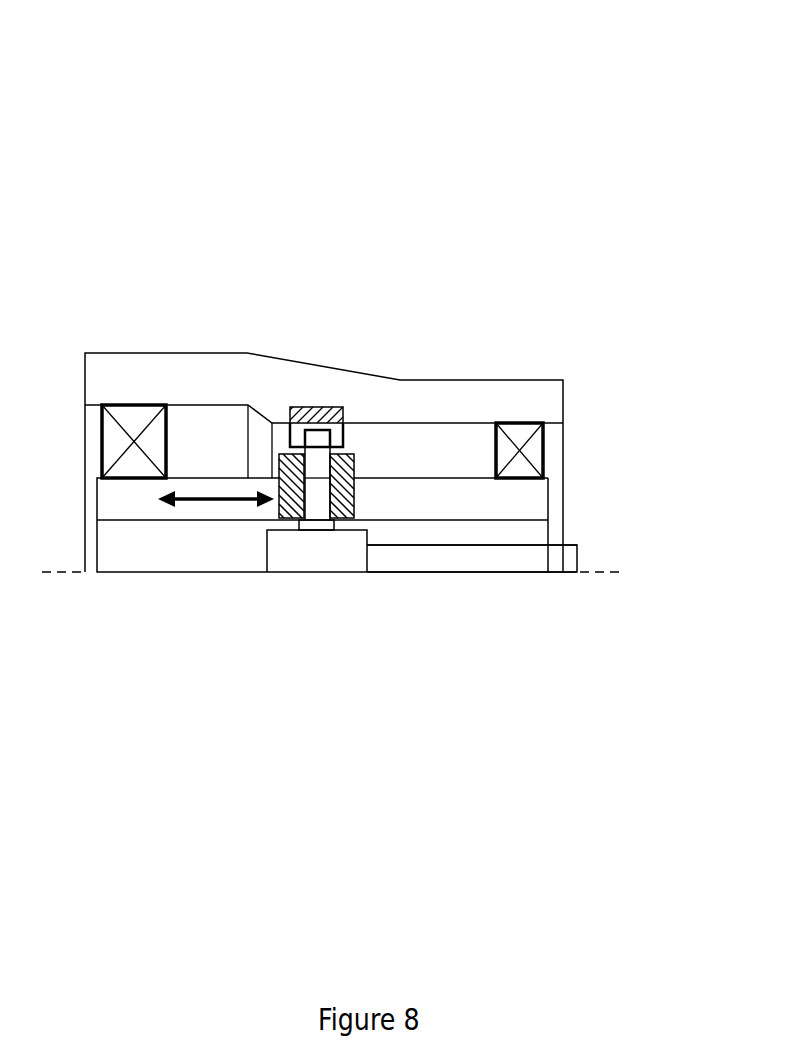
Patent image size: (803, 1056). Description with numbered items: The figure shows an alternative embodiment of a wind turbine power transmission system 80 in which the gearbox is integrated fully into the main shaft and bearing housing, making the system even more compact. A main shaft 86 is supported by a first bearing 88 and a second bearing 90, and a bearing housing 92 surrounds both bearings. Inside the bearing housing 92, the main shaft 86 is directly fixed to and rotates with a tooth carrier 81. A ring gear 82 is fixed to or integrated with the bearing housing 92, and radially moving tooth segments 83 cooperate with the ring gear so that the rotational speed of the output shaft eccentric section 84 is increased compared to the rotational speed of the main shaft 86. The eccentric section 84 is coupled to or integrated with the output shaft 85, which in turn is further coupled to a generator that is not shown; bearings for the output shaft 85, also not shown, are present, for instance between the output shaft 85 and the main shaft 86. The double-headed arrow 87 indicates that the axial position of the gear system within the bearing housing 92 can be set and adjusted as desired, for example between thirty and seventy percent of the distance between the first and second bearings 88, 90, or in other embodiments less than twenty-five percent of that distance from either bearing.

The power transmission system 80 is at (387, 351).
The tooth carrier 81 is at (237, 542).
The ring gear 82 is at (416, 358).
The tooth segments 83 is at (351, 543).
The output shaft eccentric section 84 is at (317, 610).
The output shaft 85 is at (472, 598).
The main shaft 86 is at (398, 506).
The axial position adjustment 87 is at (221, 379).
The first bearing 88 is at (120, 350).
The second bearing 90 is at (597, 439).
The bearing housing 92 is at (392, 457).